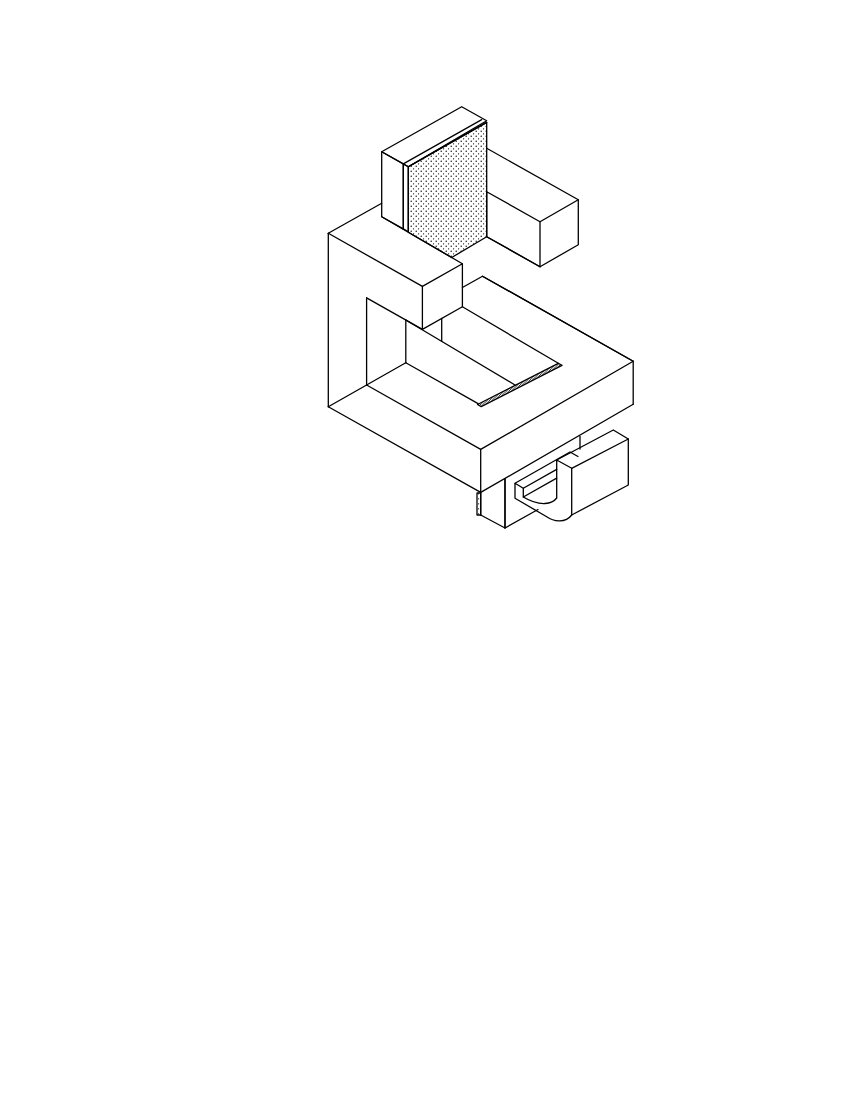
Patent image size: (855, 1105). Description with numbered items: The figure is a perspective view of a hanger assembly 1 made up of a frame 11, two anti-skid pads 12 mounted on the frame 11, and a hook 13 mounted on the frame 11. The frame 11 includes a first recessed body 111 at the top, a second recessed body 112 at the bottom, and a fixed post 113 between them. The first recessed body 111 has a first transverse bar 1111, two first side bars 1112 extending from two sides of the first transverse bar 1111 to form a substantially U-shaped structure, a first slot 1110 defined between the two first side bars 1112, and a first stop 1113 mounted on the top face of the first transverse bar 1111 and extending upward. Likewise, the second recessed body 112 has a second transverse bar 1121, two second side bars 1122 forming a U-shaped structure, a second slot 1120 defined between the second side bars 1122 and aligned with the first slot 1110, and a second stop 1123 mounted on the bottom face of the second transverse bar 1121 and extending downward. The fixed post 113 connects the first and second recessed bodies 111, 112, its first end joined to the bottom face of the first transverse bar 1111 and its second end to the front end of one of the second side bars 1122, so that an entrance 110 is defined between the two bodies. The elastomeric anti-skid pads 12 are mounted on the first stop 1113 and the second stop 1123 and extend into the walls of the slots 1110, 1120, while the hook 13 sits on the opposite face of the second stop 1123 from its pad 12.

The hanger assembly 1 is at (300, 65).
The frame 11 is at (304, 393).
The anti-skid pads 12 is at (490, 117).
The hook 13 is at (620, 506).
The entrance 110 is at (538, 291).
The first recessed body 111 is at (328, 233).
The second recessed body 112 is at (380, 423).
The fixed post 113 is at (347, 350).
The first slot 1110 is at (522, 228).
The first transverse bar 1111 is at (368, 222).
The first side bars 1112 is at (395, 257).
The first stop 1113 is at (432, 133).
The second slot 1120 is at (481, 376).
The second transverse bar 1121 is at (613, 403).
The second side bars 1122 is at (417, 437).
The second stop 1123 is at (520, 510).